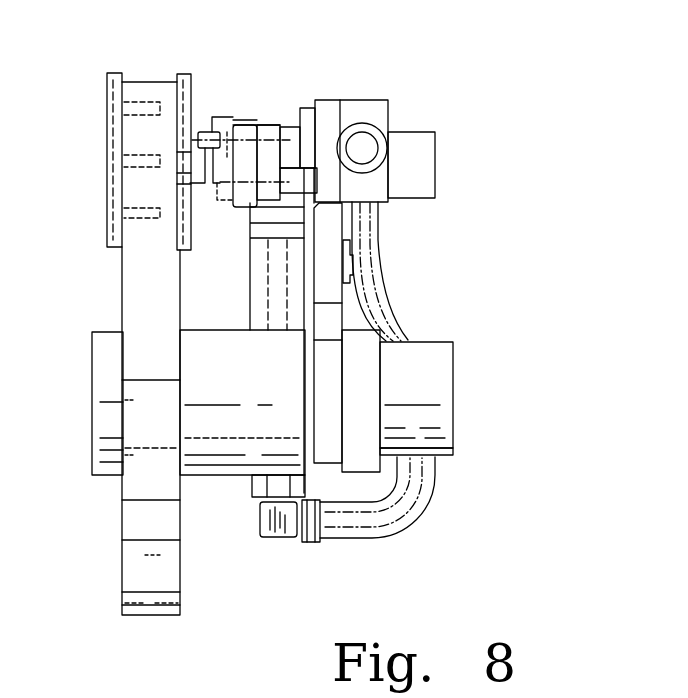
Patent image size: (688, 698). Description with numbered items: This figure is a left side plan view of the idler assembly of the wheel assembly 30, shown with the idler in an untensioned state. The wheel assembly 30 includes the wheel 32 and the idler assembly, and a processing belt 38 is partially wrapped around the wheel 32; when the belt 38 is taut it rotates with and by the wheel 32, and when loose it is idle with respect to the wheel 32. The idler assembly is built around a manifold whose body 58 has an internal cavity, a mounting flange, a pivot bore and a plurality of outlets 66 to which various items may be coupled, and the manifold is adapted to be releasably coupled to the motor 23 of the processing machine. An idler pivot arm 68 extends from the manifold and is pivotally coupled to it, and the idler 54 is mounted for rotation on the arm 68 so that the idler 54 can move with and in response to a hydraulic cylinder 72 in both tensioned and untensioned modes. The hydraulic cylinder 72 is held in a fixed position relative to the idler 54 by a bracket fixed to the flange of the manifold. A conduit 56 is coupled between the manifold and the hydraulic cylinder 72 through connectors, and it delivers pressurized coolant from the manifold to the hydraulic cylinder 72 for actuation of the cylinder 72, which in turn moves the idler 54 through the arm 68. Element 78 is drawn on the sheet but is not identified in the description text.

The wheel assembly 30 is at (533, 112).
The motor 23 is at (100, 370).
The wheel 32 is at (123, 557).
The processing belt 38 is at (172, 555).
The idler wheel 54 is at (150, 86).
The conduit 56 is at (416, 520).
The body 58 is at (367, 102).
The outlets 66 is at (390, 130).
The idler pivot arm 68 is at (286, 210).
The hydraulic cylinder 72 is at (257, 298).
The sensor 78 is at (227, 152).